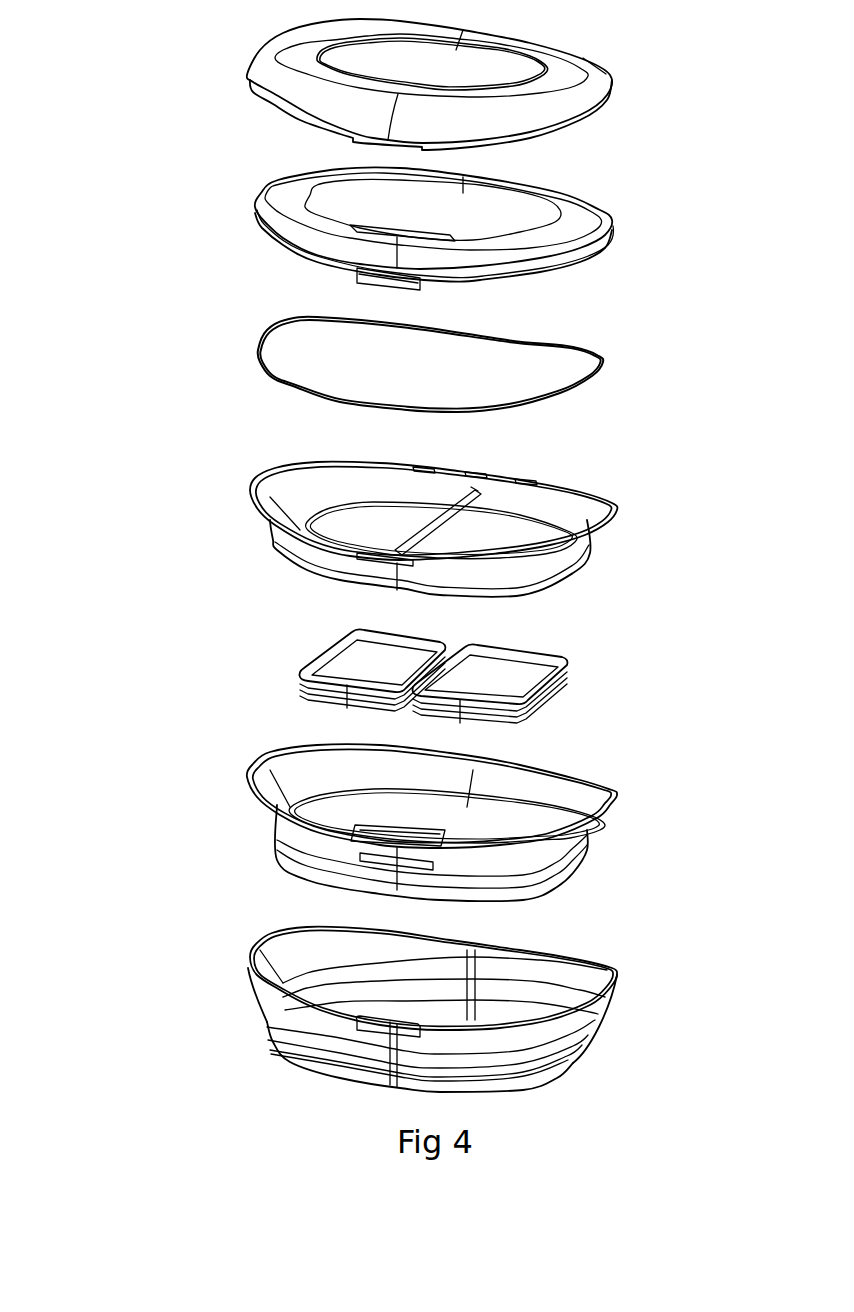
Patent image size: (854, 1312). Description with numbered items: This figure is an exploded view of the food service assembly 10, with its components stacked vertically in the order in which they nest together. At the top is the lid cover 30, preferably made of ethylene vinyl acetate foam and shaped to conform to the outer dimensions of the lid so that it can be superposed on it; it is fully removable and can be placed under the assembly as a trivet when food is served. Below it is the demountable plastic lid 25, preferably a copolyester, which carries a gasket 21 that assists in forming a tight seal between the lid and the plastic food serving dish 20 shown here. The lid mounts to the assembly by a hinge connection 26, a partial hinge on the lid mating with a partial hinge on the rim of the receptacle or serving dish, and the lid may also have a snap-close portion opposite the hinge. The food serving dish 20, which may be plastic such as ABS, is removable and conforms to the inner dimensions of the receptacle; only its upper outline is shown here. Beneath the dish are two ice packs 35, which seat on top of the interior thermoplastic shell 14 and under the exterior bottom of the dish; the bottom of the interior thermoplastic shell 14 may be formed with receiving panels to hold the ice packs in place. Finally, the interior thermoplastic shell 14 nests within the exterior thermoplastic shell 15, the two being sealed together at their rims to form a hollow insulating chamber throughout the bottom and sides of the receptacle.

The food service assembly 10 is at (160, 543).
The lid cover 30 is at (602, 82).
The demountable plastic lid 25 is at (597, 222).
The gasket 21 is at (604, 358).
The hinge connection 26 is at (530, 480).
The food serving dish 20 is at (492, 505).
The ice packs 35 is at (567, 672).
The interior thermoplastic shell 14 is at (553, 850).
The exterior thermoplastic shell 15 is at (567, 1030).